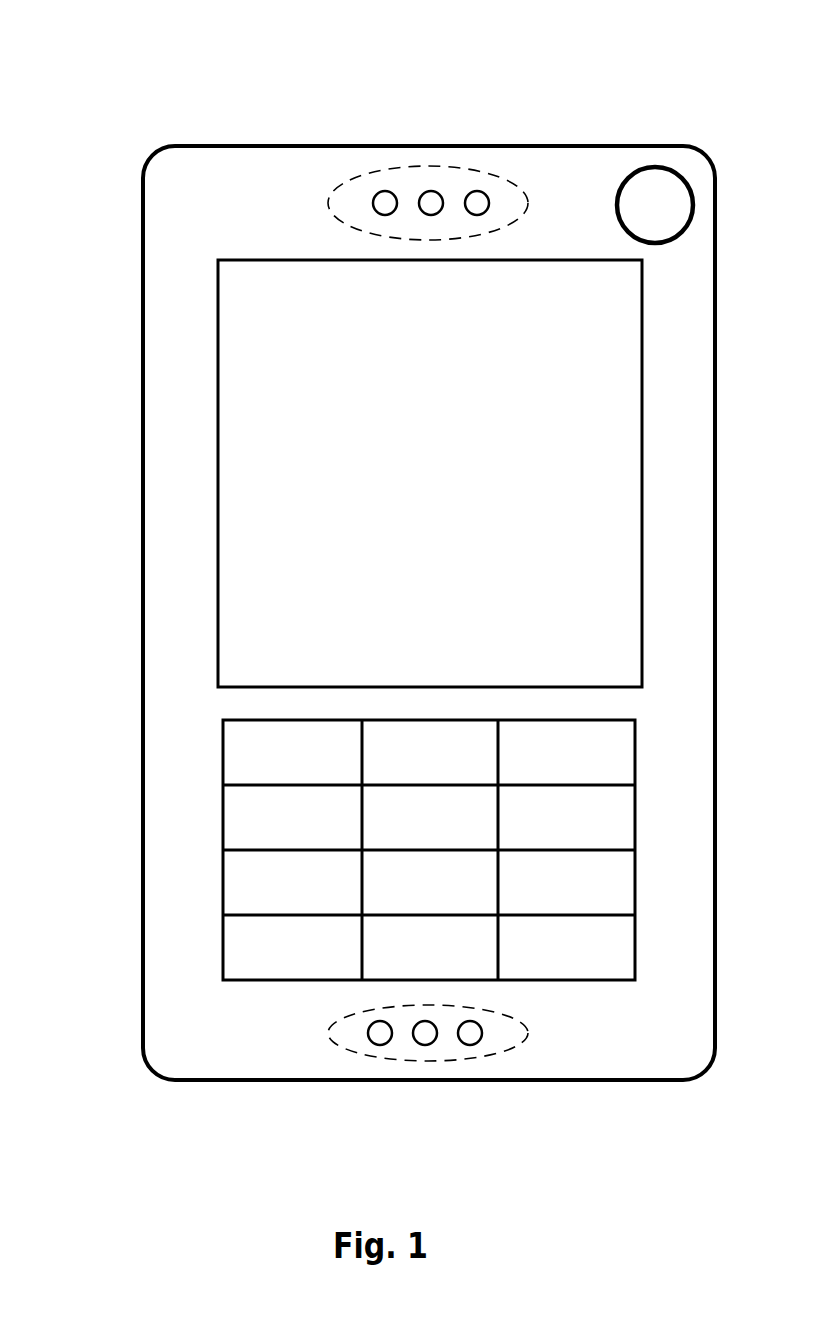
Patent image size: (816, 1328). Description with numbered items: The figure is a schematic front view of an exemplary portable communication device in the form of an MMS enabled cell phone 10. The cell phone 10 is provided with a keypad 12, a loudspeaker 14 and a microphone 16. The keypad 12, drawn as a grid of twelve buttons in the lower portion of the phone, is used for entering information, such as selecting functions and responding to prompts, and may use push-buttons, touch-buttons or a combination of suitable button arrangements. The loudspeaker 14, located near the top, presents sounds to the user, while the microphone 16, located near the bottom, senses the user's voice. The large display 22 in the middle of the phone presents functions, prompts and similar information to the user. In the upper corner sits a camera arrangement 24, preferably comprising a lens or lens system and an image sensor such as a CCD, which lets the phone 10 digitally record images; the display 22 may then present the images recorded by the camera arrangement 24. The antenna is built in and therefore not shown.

The cell phone 10 is at (218, 113).
The keypad 12 is at (243, 740).
The loudspeaker 14 is at (455, 177).
The microphone 16 is at (403, 1048).
The display 22 is at (451, 488).
The camera arrangement 24 is at (646, 178).